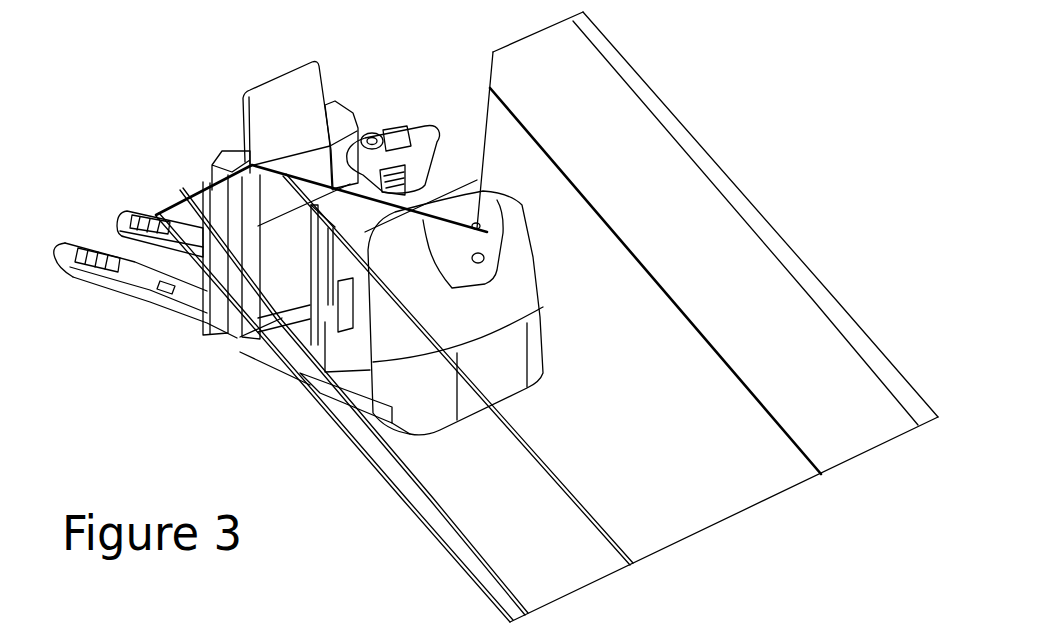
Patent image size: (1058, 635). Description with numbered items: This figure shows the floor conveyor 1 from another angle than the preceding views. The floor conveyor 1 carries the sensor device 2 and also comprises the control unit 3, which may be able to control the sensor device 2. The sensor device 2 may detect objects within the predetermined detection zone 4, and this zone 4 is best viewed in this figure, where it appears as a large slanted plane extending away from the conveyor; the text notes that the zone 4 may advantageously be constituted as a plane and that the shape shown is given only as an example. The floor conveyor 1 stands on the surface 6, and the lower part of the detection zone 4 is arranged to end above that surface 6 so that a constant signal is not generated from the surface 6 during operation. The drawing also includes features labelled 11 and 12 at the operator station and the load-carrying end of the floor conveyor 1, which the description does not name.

The floor conveyor 1 is at (152, 73).
The sensor device 2 is at (477, 226).
The control unit 3 is at (388, 133).
The predetermined detection zone 4 is at (640, 387).
The surface 6 is at (143, 384).
The steering wheel 11 is at (368, 152).
The forks 12 is at (116, 245).